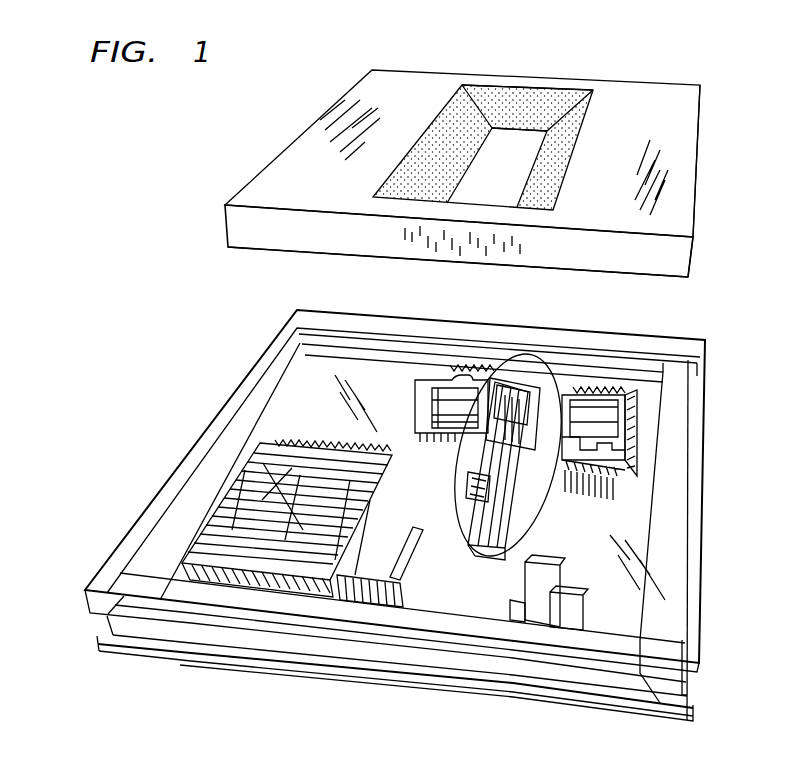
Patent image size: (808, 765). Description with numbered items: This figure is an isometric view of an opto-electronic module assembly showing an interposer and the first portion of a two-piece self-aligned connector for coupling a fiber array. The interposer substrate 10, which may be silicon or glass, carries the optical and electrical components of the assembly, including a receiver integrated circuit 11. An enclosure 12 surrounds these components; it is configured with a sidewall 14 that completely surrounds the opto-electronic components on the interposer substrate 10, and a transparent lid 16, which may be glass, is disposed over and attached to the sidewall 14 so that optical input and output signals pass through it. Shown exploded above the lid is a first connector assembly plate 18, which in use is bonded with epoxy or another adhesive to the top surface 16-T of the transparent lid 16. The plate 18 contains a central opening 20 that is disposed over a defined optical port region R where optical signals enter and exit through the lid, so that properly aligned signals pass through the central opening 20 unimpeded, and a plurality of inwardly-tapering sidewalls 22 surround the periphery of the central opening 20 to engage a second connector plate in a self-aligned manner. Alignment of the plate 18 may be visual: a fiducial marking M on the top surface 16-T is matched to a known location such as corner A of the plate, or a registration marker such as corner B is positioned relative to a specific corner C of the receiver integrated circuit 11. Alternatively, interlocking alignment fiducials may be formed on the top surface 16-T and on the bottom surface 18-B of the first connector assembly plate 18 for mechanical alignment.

The interposer substrate 10 is at (695, 702).
The receiver integrated circuit 11 is at (445, 415).
The enclosure 12 is at (387, 515).
The sidewall 14 is at (102, 622).
The transparent lid 16 is at (366, 515).
The top surface of transparent lid 16-T is at (245, 388).
The first connector assembly plate 18 is at (683, 123).
The bottom surface of first connector assembly plate 18-B is at (668, 277).
The central opening 20 is at (533, 138).
The inwardly-tapering sidewalls 22 is at (445, 130).
The corner of first connector assembly plate A is at (463, 73).
The corner of first connector assembly plate B is at (492, 128).
The corner of receiver integrated circuit C is at (432, 382).
The fiducial marking M is at (412, 358).
The optical port region R is at (547, 363).